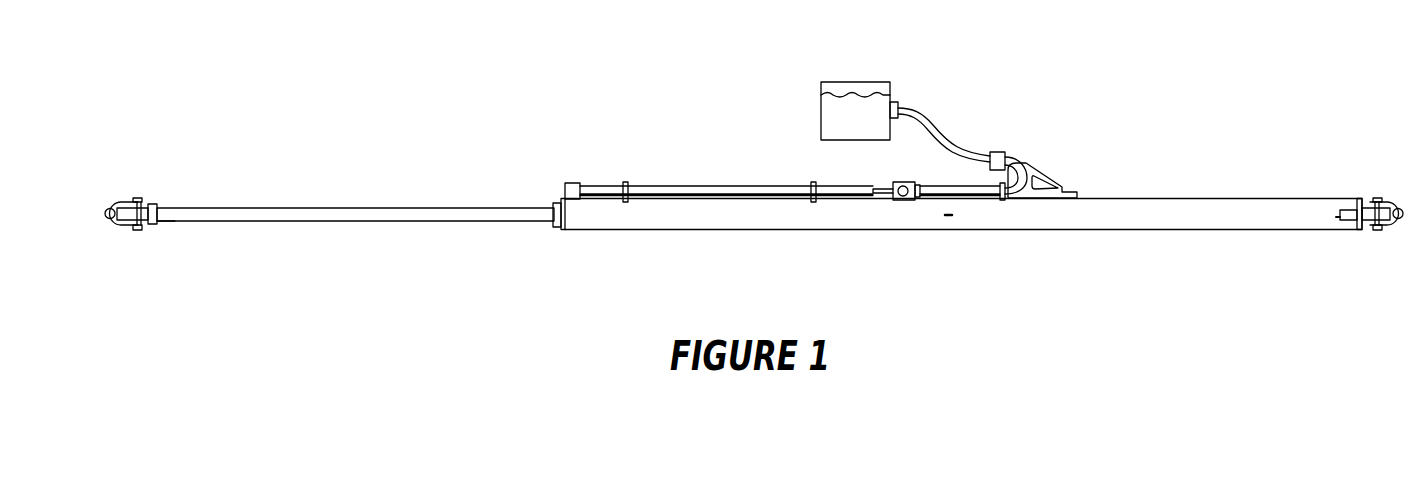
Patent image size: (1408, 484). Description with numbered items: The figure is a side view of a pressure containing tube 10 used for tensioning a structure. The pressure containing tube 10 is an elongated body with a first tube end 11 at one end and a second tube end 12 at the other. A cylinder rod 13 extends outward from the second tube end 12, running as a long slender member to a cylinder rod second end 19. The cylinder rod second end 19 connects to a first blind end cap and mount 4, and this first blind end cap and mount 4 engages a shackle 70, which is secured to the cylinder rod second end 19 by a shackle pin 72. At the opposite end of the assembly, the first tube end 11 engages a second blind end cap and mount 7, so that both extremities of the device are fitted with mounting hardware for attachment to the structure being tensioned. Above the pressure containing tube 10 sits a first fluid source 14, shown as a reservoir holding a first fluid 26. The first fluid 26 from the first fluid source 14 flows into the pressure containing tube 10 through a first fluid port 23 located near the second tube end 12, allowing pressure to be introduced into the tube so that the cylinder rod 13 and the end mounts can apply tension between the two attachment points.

The shackle 70 is at (116, 202).
The shackle pin 72 is at (137, 230).
The first blind end cap and mount 4 is at (151, 205).
The cylinder rod 13 is at (334, 207).
The cylinder rod second end 19 is at (170, 230).
The first fluid port 23 is at (566, 200).
The second tube end 12 is at (563, 230).
The pressure containing tube 10 is at (761, 230).
The first fluid source 14 is at (832, 82).
The first fluid 26 is at (868, 95).
The second blind end cap and mount 7 is at (1370, 202).
The first tube end 11 is at (1360, 230).